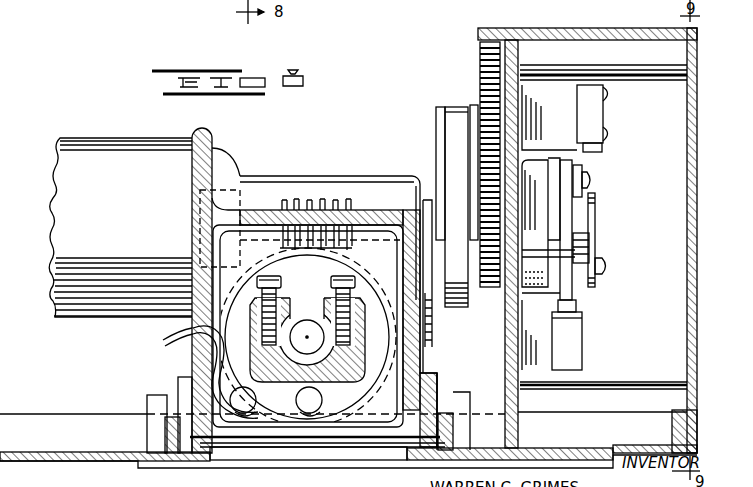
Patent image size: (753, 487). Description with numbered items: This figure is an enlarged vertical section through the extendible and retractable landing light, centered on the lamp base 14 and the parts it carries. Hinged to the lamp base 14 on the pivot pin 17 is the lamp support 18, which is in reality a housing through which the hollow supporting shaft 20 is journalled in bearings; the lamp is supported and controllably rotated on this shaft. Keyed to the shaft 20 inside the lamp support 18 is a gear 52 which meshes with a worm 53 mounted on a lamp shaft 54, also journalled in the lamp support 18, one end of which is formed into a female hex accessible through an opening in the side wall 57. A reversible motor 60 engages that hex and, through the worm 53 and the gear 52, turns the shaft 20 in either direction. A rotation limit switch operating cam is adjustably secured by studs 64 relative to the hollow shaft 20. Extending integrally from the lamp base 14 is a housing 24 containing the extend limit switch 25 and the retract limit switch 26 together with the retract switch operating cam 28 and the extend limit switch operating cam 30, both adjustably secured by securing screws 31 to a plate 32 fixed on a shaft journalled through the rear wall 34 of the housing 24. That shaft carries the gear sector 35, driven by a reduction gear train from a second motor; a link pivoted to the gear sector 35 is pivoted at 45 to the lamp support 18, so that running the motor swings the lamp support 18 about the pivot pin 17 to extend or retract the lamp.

The lamp base 14 is at (74, 413).
The pivot pin 17 is at (150, 419).
The lamp support 18 is at (314, 180).
The hollow supporting shaft 20 is at (300, 320).
The housing 24 is at (637, 88).
The extend limit switch 25 is at (600, 121).
The retract limit switch 26 is at (577, 325).
The retract switch operating cam 28 is at (594, 264).
The extend limit switch operating cam 30 is at (576, 305).
The securing screws 31 is at (587, 180).
The plate 32 is at (560, 172).
The rear wall 34 is at (522, 254).
The gear sector 35 is at (480, 64).
The pivot 45 is at (443, 310).
The gear 52 is at (190, 349).
The worm 53 is at (340, 205).
The lamp shaft 54 is at (263, 194).
The side wall 57 is at (214, 162).
The motor 60 is at (108, 153).
The studs 64 is at (270, 280).